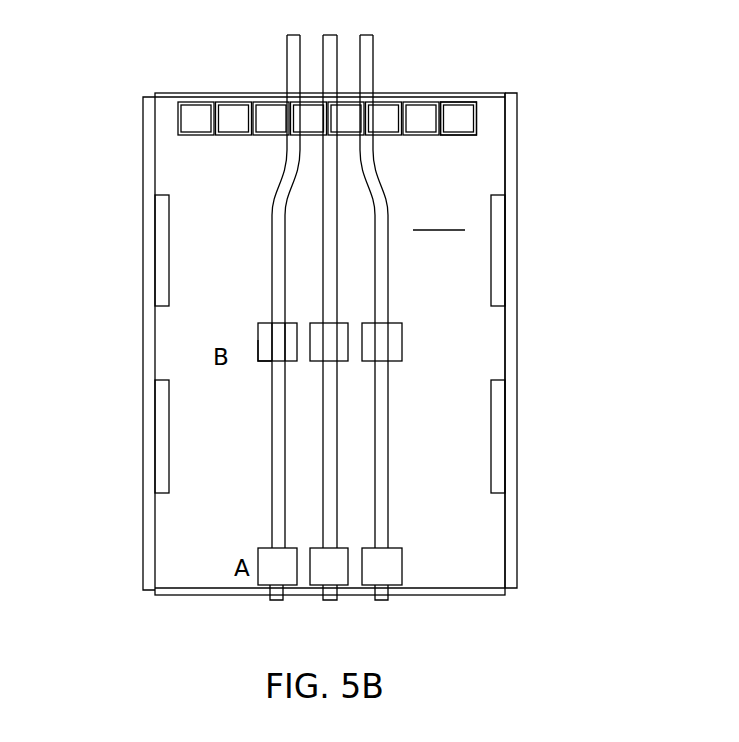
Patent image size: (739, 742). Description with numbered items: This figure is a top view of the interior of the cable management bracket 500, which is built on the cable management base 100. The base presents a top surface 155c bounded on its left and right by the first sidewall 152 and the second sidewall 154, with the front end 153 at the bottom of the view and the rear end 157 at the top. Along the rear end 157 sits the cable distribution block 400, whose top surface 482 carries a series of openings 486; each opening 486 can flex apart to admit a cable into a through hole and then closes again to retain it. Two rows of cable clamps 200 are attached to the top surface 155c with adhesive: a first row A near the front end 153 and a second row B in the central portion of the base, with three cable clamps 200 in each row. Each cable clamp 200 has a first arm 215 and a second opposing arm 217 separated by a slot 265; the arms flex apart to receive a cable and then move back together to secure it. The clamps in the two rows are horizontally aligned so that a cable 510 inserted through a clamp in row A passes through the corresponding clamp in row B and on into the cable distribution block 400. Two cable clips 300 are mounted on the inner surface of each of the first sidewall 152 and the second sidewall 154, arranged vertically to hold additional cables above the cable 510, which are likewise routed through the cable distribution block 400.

The cable management base 100 is at (521, 170).
The first sidewall 152 is at (143, 545).
The front end 153 is at (186, 601).
The second sidewall 154 is at (517, 540).
The top surface 155c is at (441, 219).
The rear end 157 is at (170, 82).
The cable clamp 200 is at (243, 340).
The first arm 215 is at (263, 353).
The second opposing arm 217 is at (292, 350).
The slot 265 is at (262, 326).
The cable clip 300 is at (163, 258).
The cable distribution block 400 is at (203, 100).
The top surface 482 is at (470, 120).
The opening 486 is at (443, 100).
The cable management bracket 500 is at (95, 165).
The cable 510 is at (374, 57).